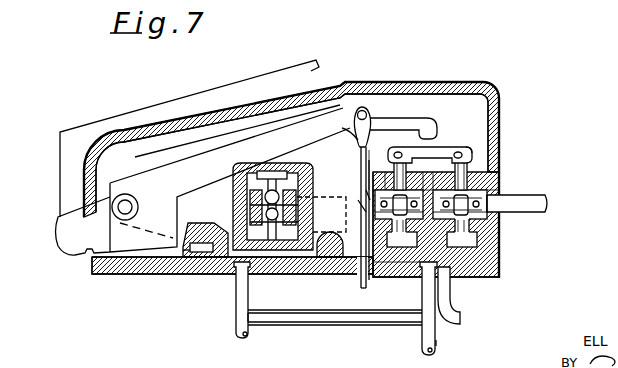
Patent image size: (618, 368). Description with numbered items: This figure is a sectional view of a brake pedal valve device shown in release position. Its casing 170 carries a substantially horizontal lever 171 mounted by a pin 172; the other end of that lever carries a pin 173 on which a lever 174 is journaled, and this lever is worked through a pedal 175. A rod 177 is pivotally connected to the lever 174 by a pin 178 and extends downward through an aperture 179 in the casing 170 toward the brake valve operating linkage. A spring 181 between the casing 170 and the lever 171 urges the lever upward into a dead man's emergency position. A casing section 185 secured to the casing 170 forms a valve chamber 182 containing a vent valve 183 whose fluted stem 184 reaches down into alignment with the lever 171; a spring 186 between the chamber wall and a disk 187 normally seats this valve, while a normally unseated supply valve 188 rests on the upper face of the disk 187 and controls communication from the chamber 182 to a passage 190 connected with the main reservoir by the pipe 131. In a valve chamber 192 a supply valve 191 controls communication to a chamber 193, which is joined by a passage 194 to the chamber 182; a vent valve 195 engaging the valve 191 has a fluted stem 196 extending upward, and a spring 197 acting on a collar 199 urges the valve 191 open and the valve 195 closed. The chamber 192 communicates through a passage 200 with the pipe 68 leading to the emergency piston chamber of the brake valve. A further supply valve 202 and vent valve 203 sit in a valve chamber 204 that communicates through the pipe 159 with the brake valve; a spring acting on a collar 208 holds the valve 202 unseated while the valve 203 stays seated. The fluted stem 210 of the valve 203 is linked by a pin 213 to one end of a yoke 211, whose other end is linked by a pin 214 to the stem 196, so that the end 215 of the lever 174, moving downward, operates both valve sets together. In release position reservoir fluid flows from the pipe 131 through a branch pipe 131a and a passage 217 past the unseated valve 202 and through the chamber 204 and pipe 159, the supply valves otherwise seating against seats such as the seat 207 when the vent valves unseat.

The pipe 68 is at (436, 343).
The pipe 131 is at (237, 330).
The branch pipe 131a is at (318, 323).
The pipe 159 is at (547, 202).
The casing 170 is at (497, 272).
The lever 171 is at (192, 260).
The pin 172 is at (356, 272).
The pin 173 is at (113, 205).
The lever 174 is at (290, 137).
The pedal 175 is at (162, 108).
The rod 177 is at (360, 143).
The pin 178 is at (364, 107).
The aperture 179 is at (368, 295).
The spring 181 is at (214, 270).
The valve chamber 182 is at (292, 268).
The vent valve 183 is at (262, 268).
The fluted stem 184 is at (266, 323).
The casing section 185 is at (308, 72).
The spring 186 is at (262, 190).
The disk 187 is at (210, 258).
The supply valve 188 is at (262, 206).
The passage 190 is at (243, 168).
The supply valve 191 is at (392, 232).
The valve chamber 192 is at (360, 187).
The chamber 193 is at (400, 267).
The passage 194 is at (304, 212).
The vent valve 195 is at (394, 180).
The fluted stem 196 is at (392, 176).
The spring 197 is at (361, 216).
The collar 199 is at (361, 192).
The passage 200 is at (406, 232).
The supply valve 202 is at (482, 242).
The vent valve 203 is at (496, 177).
The valve chamber 204 is at (486, 225).
The valve seat 207 is at (497, 212).
The collar 208 is at (440, 195).
The fluted stem 210 is at (470, 167).
The yoke 211 is at (470, 150).
The pin 213 is at (463, 156).
The pin 214 is at (408, 144).
The end of lever 215 is at (432, 117).
The passage 217 is at (465, 277).